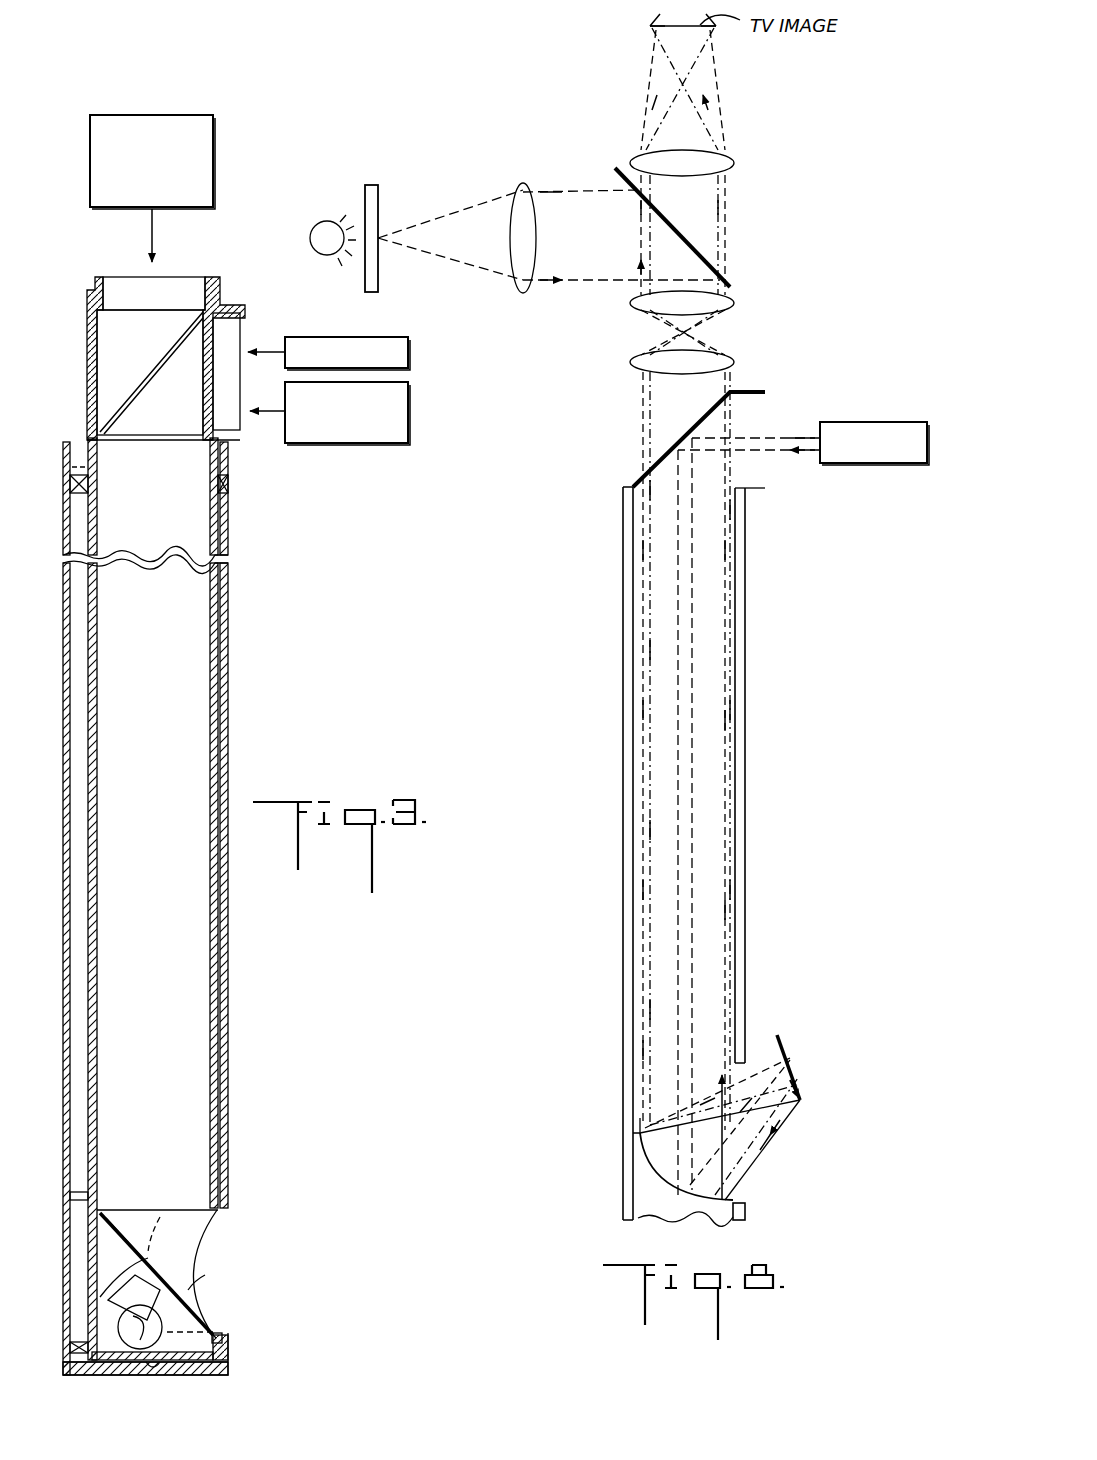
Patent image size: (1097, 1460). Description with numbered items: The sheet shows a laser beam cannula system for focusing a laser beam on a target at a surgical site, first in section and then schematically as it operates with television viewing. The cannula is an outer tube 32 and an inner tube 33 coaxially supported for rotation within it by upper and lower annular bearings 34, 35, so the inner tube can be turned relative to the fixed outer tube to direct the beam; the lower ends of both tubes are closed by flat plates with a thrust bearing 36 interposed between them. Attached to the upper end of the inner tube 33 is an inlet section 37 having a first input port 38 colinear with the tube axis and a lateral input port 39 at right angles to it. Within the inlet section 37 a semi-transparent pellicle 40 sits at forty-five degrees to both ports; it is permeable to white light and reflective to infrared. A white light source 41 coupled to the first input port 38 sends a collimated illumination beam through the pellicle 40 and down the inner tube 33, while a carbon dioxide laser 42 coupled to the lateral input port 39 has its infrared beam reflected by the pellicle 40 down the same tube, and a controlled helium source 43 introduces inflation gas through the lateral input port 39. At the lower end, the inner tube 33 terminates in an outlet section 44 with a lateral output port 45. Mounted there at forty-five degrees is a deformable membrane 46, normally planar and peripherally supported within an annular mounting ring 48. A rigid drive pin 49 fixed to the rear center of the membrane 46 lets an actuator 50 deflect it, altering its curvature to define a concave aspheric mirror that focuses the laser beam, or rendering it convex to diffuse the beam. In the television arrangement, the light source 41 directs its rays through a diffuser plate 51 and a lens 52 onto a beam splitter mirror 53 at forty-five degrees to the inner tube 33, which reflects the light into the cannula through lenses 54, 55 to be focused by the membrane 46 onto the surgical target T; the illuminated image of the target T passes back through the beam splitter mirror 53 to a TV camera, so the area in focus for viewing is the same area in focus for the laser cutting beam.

In FIG. 3, the outer tube 32 is at (228, 733).
In FIG. 3, the inner tube 33 is at (214, 762).
In FIG. 8, the inner tube 33 is at (633, 643).
In FIG. 3, the upper annular bearing 34 is at (218, 490).
In FIG. 3, the lower annular bearing 35 is at (228, 1352).
In FIG. 3, the thrust bearing 36 is at (153, 1373).
In FIG. 3, the inlet section 37 is at (103, 290).
In FIG. 3, the first input port 38 is at (178, 292).
In FIG. 3, the lateral input port 39 is at (233, 343).
In FIG. 8, the lateral input port 39 is at (752, 410).
In FIG. 3, the pellicle 40 is at (128, 388).
In FIG. 8, the pellicle 40 is at (700, 422).
In FIG. 3, the white light source 41 is at (213, 118).
In FIG. 8, the white light source 41 is at (327, 222).
In FIG. 3, the carbon dioxide laser 42 is at (408, 340).
In FIG. 8, the carbon dioxide laser 42 is at (873, 422).
In FIG. 3, the helium source 43 is at (406, 444).
In FIG. 3, the outlet section 44 is at (132, 1255).
In FIG. 3, the lateral output port 45 is at (207, 1232).
In FIG. 3, the deformable membrane 46 is at (100, 1282).
In FIG. 8, the deformable membrane 46 is at (655, 1165).
In FIG. 3, the annular mounting ring 48 is at (217, 1338).
In FIG. 3, the rigid drive pin 49 is at (188, 1290).
In FIG. 3, the actuator 50 is at (108, 1305).
In FIG. 8, the diffuser plate 51 is at (378, 190).
In FIG. 8, the lens 52 is at (523, 185).
In FIG. 8, the beam splitter mirror 53 is at (690, 217).
In FIG. 8, the lens 54 is at (734, 303).
In FIG. 8, the lens 55 is at (735, 364).
In FIG. 8, the surgical target T is at (785, 1055).